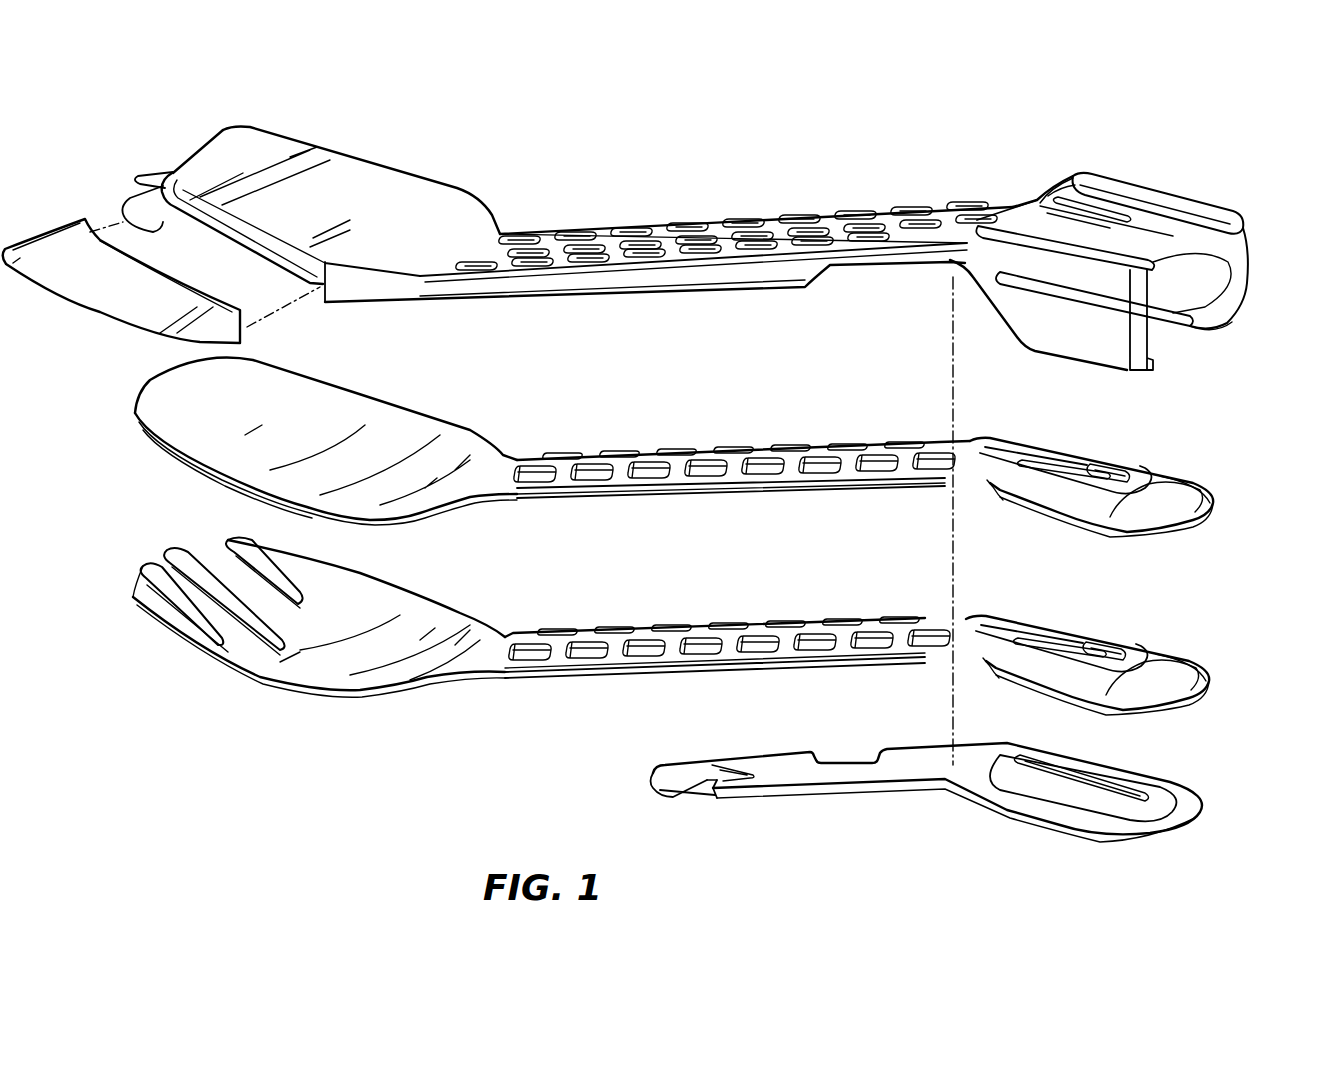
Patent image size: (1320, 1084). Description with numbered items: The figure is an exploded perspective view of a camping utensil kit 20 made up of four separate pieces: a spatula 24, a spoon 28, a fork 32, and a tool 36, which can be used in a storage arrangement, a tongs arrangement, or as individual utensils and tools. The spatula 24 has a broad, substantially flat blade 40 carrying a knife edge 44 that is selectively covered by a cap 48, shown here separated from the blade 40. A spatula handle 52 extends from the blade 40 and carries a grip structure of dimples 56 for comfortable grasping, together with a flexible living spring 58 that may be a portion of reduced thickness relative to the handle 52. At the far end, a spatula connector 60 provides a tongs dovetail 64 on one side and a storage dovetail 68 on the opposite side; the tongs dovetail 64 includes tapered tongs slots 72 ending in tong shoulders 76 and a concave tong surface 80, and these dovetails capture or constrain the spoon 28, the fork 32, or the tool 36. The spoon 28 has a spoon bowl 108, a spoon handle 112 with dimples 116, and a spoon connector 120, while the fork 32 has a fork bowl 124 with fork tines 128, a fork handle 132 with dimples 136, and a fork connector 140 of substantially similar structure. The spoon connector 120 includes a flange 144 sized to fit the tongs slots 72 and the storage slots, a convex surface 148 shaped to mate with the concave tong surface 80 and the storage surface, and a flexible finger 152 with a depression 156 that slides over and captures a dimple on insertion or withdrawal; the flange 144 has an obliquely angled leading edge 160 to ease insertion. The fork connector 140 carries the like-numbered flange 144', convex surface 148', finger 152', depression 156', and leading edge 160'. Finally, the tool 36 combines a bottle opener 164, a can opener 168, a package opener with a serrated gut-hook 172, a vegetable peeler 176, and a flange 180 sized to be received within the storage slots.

The camping utensil kit 20 is at (912, 156).
The spatula 24 is at (782, 218).
The spoon 28 is at (676, 444).
The fork 32 is at (722, 628).
The tool 36 is at (880, 805).
The blade 40 is at (370, 195).
The knife edge 44 is at (115, 227).
The cap 48 is at (130, 298).
The spatula handle 52 is at (548, 235).
The dimples 56 is at (700, 240).
The living spring 58 is at (885, 270).
The spatula connector 60 is at (1190, 172).
The tongs dovetail 64 is at (1232, 218).
The storage dovetail 68 is at (1225, 325).
The tongs slots 72 is at (1122, 215).
The tong shoulders 76 is at (1070, 190).
The concave tong surface 80 is at (1210, 267).
The spoon bowl 108 is at (385, 410).
The spoon handle 112 is at (840, 450).
The dimples 116 is at (765, 480).
The spoon connector 120 is at (1152, 447).
The fork bowl 124 is at (310, 660).
The fork tines 128 is at (155, 560).
The fork handle 132 is at (728, 657).
The dimples 136 is at (640, 660).
The fork connector 140 is at (1167, 617).
The flange 144 is at (1219, 468).
The flange 144' is at (1211, 645).
The convex surface 148 is at (1058, 508).
The convex surface 148' is at (1089, 692).
The finger 152 is at (1052, 432).
The finger 152' is at (1059, 609).
The depression 156 is at (1095, 431).
The depression 156' is at (1125, 616).
The leading edge 160 is at (942, 518).
The leading edge 160' is at (996, 694).
The bottle opener 164 is at (870, 760).
The can opener 168 is at (660, 790).
The serrated gut-hook 172 is at (714, 792).
The vegetable peeler 176 is at (1100, 780).
The flange 180 is at (1052, 805).